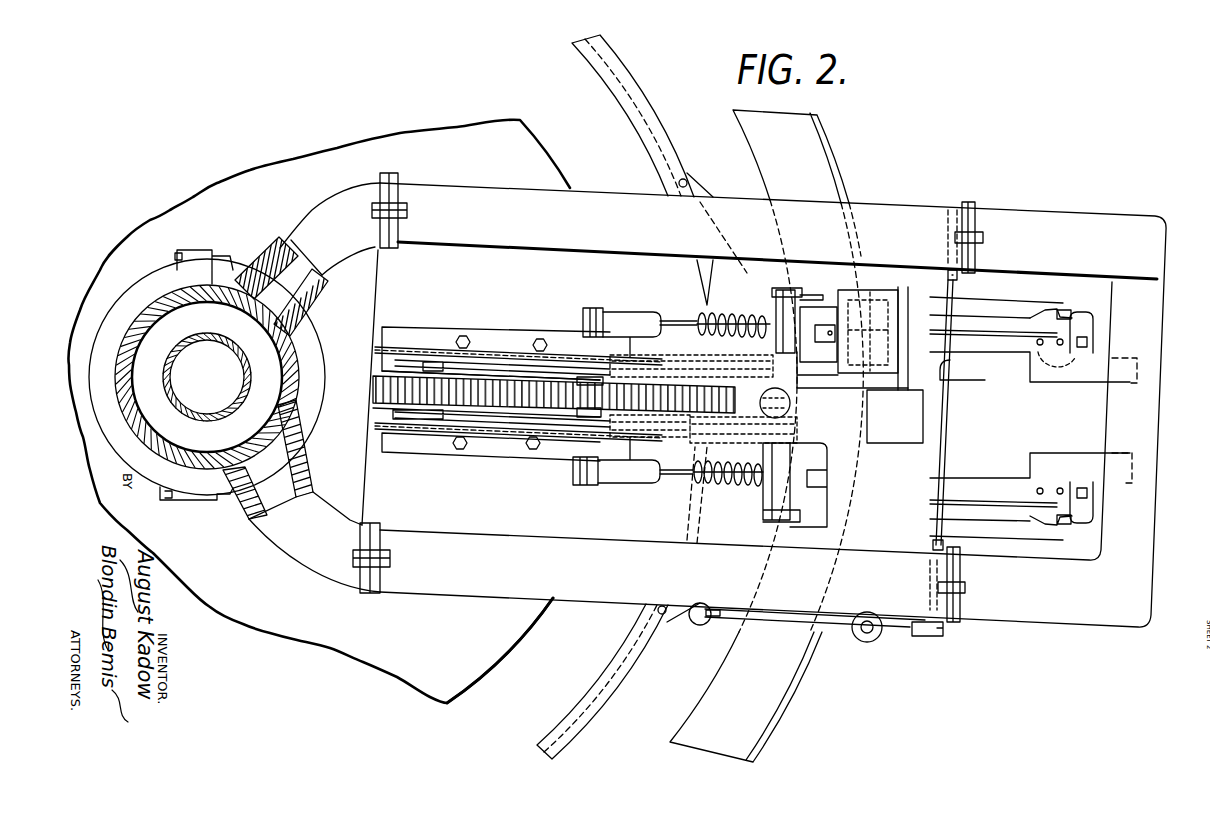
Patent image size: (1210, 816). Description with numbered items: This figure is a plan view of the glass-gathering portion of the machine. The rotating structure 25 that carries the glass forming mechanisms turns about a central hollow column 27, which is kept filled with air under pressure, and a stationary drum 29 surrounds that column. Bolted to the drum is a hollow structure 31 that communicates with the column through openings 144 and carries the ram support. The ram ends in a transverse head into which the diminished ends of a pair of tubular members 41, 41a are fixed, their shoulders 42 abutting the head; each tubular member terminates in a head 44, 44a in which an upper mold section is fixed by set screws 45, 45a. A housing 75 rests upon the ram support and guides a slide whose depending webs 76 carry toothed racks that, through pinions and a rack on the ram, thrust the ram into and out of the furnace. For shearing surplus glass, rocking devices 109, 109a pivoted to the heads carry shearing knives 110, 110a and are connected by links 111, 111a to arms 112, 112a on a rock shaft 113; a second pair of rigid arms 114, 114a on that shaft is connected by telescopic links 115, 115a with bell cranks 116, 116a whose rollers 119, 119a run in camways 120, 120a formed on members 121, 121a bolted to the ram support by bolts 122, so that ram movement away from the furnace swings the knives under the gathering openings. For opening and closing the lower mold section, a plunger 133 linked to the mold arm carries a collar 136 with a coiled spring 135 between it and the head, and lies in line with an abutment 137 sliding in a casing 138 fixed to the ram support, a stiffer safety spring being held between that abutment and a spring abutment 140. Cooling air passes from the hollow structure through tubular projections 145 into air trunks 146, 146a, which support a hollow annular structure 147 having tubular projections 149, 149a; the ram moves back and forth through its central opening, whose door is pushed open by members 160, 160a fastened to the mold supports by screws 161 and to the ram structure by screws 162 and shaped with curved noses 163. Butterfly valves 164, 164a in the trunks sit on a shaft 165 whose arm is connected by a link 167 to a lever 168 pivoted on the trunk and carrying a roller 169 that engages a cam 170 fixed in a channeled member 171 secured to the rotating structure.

The rotating structure 25 is at (373, 650).
The central hollow column 27 is at (230, 357).
The stationary drum 29 is at (145, 422).
The hollow structure 31 is at (310, 343).
The tubular member 41 is at (1003, 522).
The tubular member 41a is at (993, 327).
The shoulder 42 is at (843, 530).
The head 44 is at (1052, 527).
The head 44a is at (1062, 308).
The set screw 45 is at (1088, 493).
The set screw 45a is at (1088, 342).
The housing 75 is at (880, 290).
The depending web 76 is at (910, 415).
The rocking device 109 is at (1037, 524).
The rocking device 109a is at (1045, 315).
The shearing knife 110 is at (1077, 525).
The shearing knife 110a is at (1093, 320).
The link 111 is at (970, 527).
The link 111a is at (980, 302).
The arm 112 is at (773, 520).
The arm 112a is at (790, 290).
The rock shaft 113 is at (767, 320).
The rigid arm 114 is at (797, 413).
The rigid arm 114a is at (795, 366).
The link 115 is at (557, 427).
The link 115a is at (550, 357).
The bell crank 116 is at (428, 417).
The bell crank 116a is at (427, 362).
The roller 119 is at (400, 430).
The roller 119a is at (402, 357).
The camway 120 is at (500, 437).
The camway 120a is at (500, 350).
The member 121 is at (367, 428).
The member 121a is at (380, 347).
The bolt 122 is at (467, 333).
The plunger 133 is at (703, 337).
The coiled spring 135 is at (755, 333).
The collar 136 is at (710, 256).
The abutment 137 is at (670, 320).
The casing 138 is at (617, 320).
The spring abutment 140 is at (597, 310).
The opening 144 is at (212, 342).
The tubular projection 145 is at (330, 203).
The air trunk 146 is at (498, 588).
The air trunk 146a is at (590, 195).
The hollow annular structure 147 is at (1137, 523).
The tubular projection 149 is at (1087, 612).
The tubular projection 149a is at (1073, 225).
The door opening member 160 is at (990, 483).
The door opening member 160a is at (1013, 350).
The screw 161 is at (1062, 487).
The screw 162 is at (820, 475).
The curved nose 163 is at (1140, 367).
The butterfly valve 164 is at (930, 563).
The butterfly valve 164a is at (950, 213).
The shaft 165 is at (950, 415).
The link 167 is at (853, 628).
The lever 168 is at (708, 624).
The roller 169 is at (697, 624).
The cam 170 is at (705, 600).
The channeled member 171 is at (617, 657).